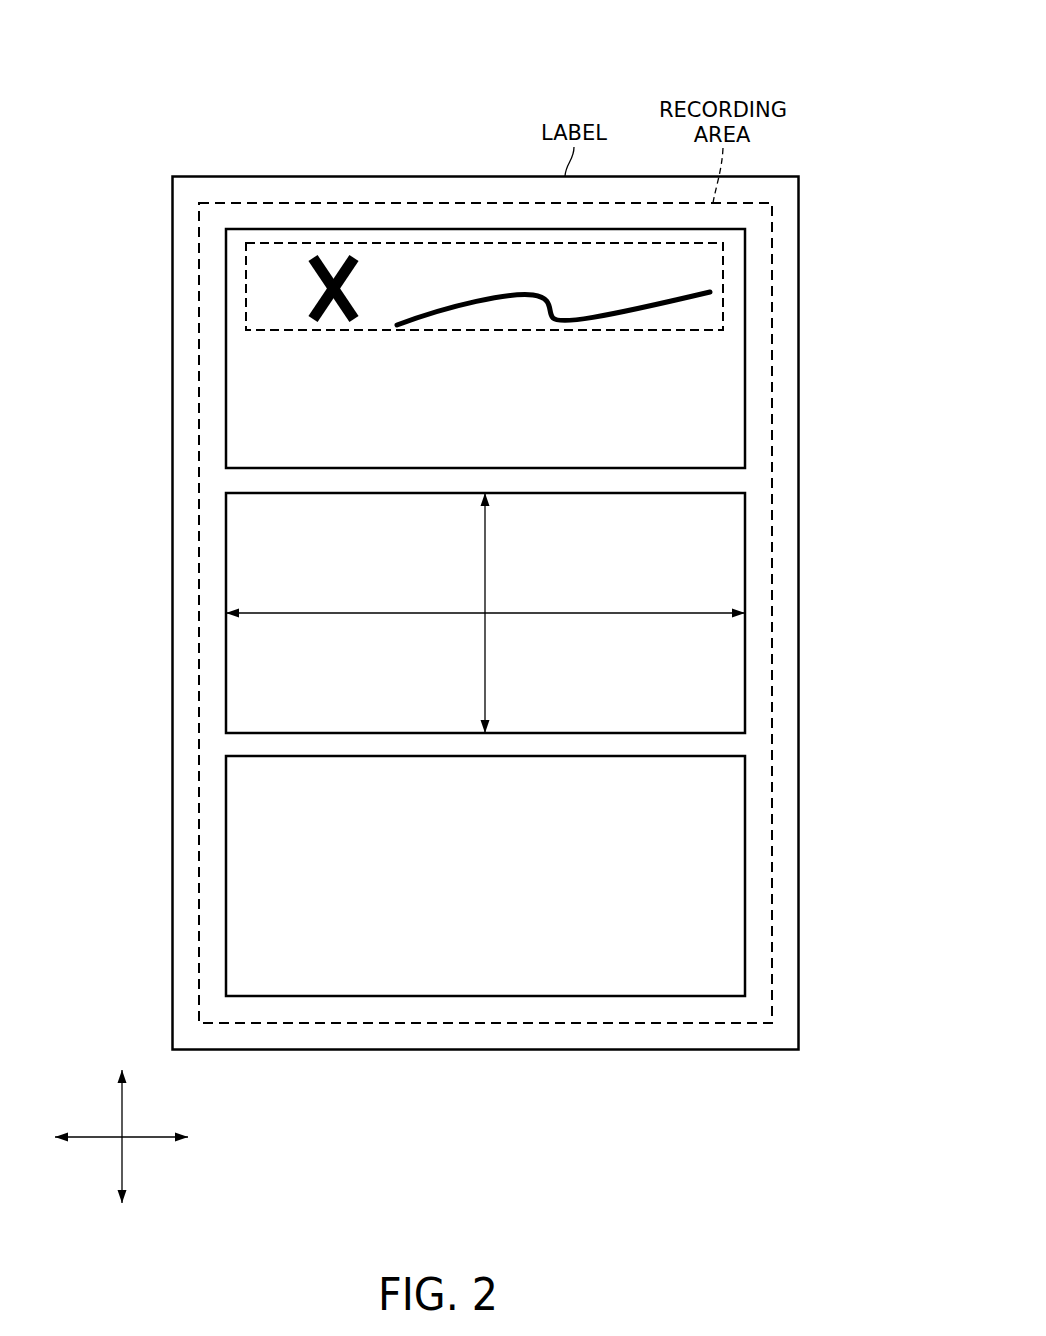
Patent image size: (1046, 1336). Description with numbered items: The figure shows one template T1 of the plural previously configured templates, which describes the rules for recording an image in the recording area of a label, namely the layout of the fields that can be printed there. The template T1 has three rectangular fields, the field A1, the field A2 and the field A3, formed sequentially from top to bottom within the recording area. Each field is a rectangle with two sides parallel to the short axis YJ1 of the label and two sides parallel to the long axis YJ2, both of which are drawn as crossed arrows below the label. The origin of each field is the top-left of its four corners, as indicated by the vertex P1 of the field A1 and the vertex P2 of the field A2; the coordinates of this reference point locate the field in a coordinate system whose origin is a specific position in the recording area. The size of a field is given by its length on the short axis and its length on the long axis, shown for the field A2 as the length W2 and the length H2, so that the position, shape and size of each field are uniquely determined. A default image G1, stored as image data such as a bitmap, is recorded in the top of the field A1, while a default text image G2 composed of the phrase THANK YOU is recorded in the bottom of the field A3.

The template T1 is at (499, 80).
The vertex P1 is at (226, 229).
The vertex P2 is at (226, 493).
The image G1 is at (357, 243).
The image G2 is at (583, 972).
The field A1 is at (746, 387).
The field A2 is at (746, 565).
The field A3 is at (746, 870).
The length H2 is at (485, 571).
The length W2 is at (575, 613).
The short axis YJ1 is at (162, 1137).
The long axis YJ2 is at (122, 1102).